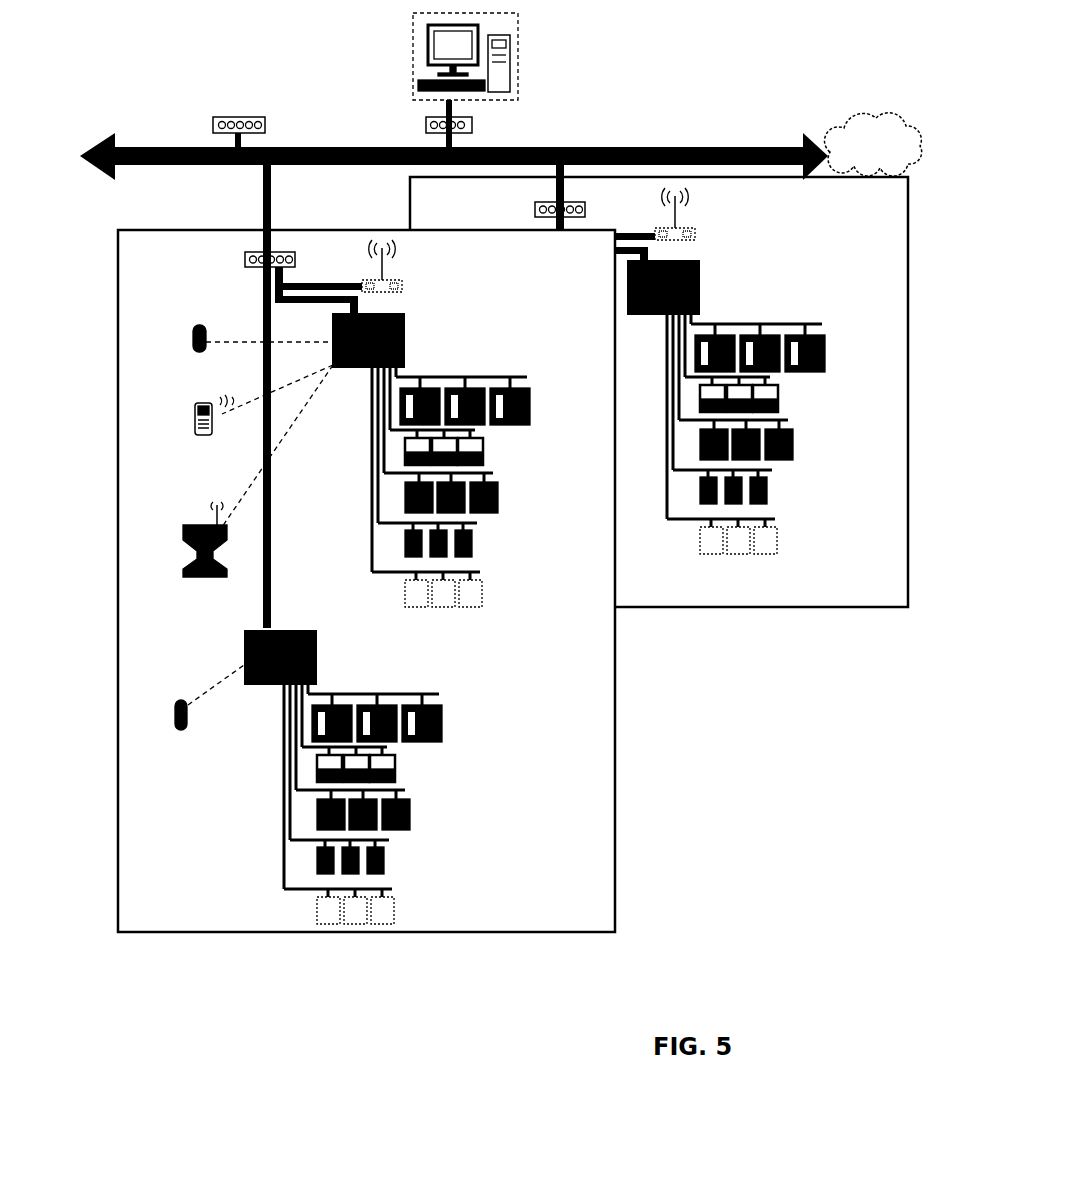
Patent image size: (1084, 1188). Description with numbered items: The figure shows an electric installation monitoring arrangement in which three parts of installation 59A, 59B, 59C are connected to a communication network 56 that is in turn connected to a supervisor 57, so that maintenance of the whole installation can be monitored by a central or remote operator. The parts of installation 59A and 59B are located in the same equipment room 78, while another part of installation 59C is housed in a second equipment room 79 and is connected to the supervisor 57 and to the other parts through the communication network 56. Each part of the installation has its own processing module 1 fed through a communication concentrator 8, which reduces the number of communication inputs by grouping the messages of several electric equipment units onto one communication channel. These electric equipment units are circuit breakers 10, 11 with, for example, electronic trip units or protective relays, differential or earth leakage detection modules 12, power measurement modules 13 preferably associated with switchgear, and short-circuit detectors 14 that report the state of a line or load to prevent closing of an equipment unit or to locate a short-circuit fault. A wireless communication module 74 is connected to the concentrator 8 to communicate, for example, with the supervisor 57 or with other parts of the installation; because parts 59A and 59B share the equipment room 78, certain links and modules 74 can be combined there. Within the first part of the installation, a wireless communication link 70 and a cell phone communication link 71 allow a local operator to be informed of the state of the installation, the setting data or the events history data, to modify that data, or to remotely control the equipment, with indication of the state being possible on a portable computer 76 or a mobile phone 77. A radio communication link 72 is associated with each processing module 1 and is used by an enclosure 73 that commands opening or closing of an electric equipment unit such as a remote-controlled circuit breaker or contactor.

The processing module 1 is at (406, 348).
The communication concentrator module 8 is at (472, 125).
The circuit breaker 10 is at (535, 407).
The circuit breaker 11 is at (505, 500).
The differential or earth leakage detection module 12 is at (490, 553).
The power measurement module 13 is at (490, 450).
The short-circuit detector 14 is at (490, 597).
The communication network 56 is at (636, 147).
The supervisor 57 is at (518, 70).
The part of installation 59A is at (468, 344).
The part of installation 59B is at (432, 670).
The part of installation 59C is at (772, 286).
The wireless communication link 70 is at (286, 444).
The cell phone communication link 71 is at (238, 414).
The radio communication link 72 is at (218, 332).
The enclosure 73 is at (193, 342).
The wireless communication module 74 is at (402, 289).
The portable computer 76 is at (190, 548).
The mobile phone 77 is at (195, 424).
The equipment room 78 is at (615, 826).
The equipment room 79 is at (806, 607).